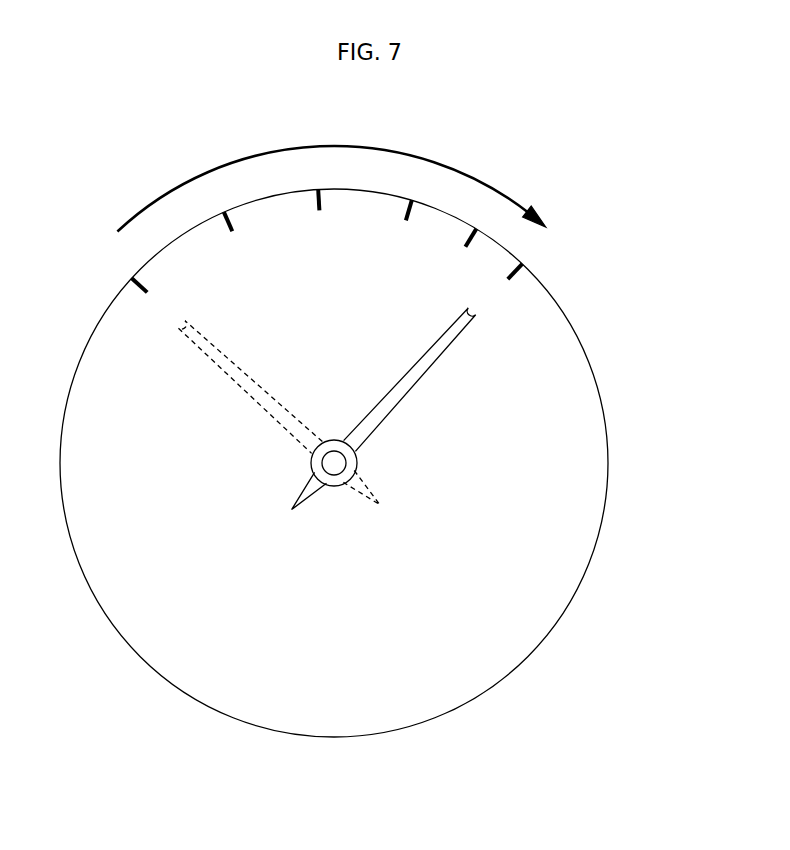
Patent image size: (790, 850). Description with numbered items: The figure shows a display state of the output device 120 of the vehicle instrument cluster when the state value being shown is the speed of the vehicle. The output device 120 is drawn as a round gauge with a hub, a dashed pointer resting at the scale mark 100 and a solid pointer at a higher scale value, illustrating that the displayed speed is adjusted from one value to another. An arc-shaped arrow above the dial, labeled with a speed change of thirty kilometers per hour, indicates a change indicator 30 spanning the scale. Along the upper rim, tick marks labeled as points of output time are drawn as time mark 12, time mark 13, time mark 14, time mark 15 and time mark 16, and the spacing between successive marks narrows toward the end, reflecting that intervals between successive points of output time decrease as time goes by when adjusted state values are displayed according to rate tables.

The output device 120 is at (370, 449).
The scale mark 100 is at (161, 291).
The value change indicator arrow (ΔV=30) 30 is at (312, 175).
The time mark T12 12 is at (209, 209).
The time mark T13 13 is at (313, 185).
The time mark T14 14 is at (407, 194).
The time mark T15 15 is at (483, 225).
The time mark T16 16 is at (530, 261).